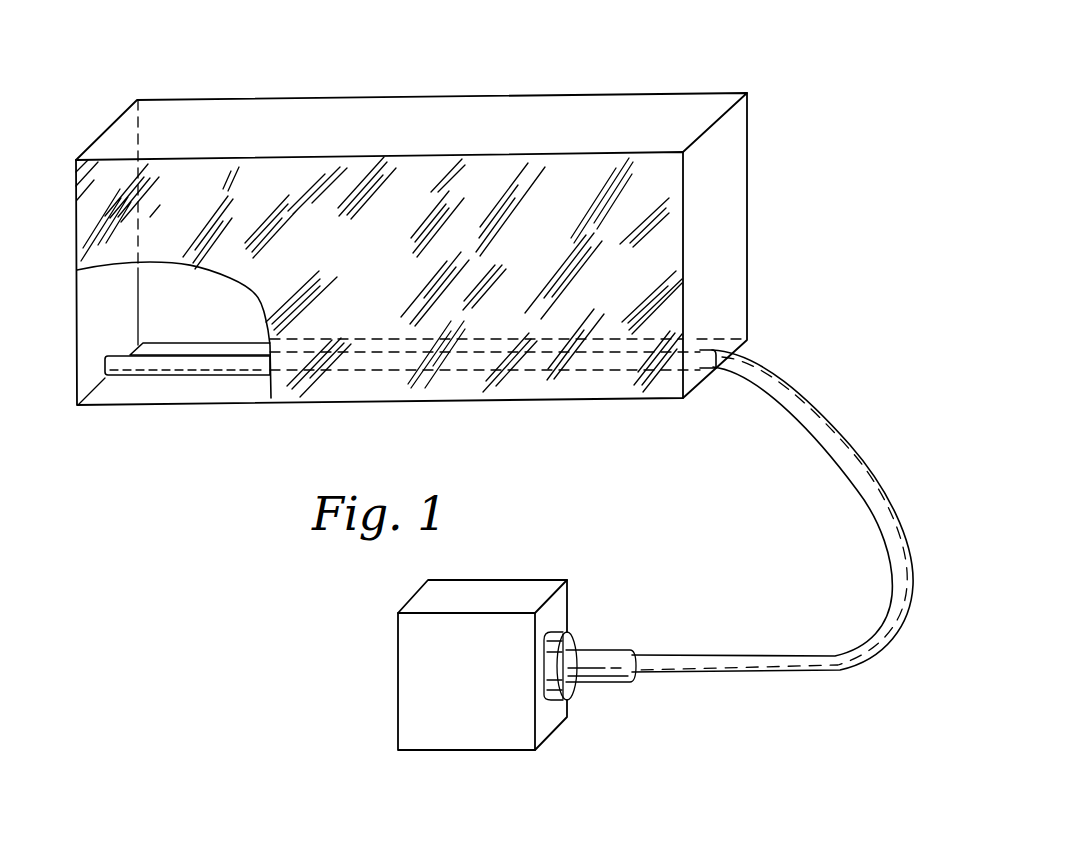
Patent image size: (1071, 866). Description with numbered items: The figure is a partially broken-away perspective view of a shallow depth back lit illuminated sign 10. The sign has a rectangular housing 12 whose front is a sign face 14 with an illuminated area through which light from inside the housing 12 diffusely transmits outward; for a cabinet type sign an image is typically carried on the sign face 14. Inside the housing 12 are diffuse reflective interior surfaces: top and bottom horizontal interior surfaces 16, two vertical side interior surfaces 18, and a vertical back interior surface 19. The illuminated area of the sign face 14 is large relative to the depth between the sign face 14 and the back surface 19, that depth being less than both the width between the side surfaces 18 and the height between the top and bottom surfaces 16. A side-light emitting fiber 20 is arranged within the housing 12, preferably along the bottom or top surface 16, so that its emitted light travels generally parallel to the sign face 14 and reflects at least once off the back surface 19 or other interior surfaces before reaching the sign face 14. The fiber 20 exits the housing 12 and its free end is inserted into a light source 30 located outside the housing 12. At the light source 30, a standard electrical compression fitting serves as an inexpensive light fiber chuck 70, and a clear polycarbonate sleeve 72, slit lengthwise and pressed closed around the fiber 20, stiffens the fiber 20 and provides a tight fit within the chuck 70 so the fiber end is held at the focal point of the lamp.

The shallow depth back lit illuminated sign 10 is at (570, 70).
The housing 12 is at (660, 103).
The sign face 14 is at (384, 280).
The top and bottom interior surfaces 16 is at (259, 141).
The side interior surfaces 18 is at (93, 343).
The back interior surface 19 is at (212, 310).
The side-light emitting fiber 20 is at (210, 368).
The light source 30 is at (441, 771).
The light fiber chuck 70 is at (554, 703).
The sleeve 72 is at (604, 684).